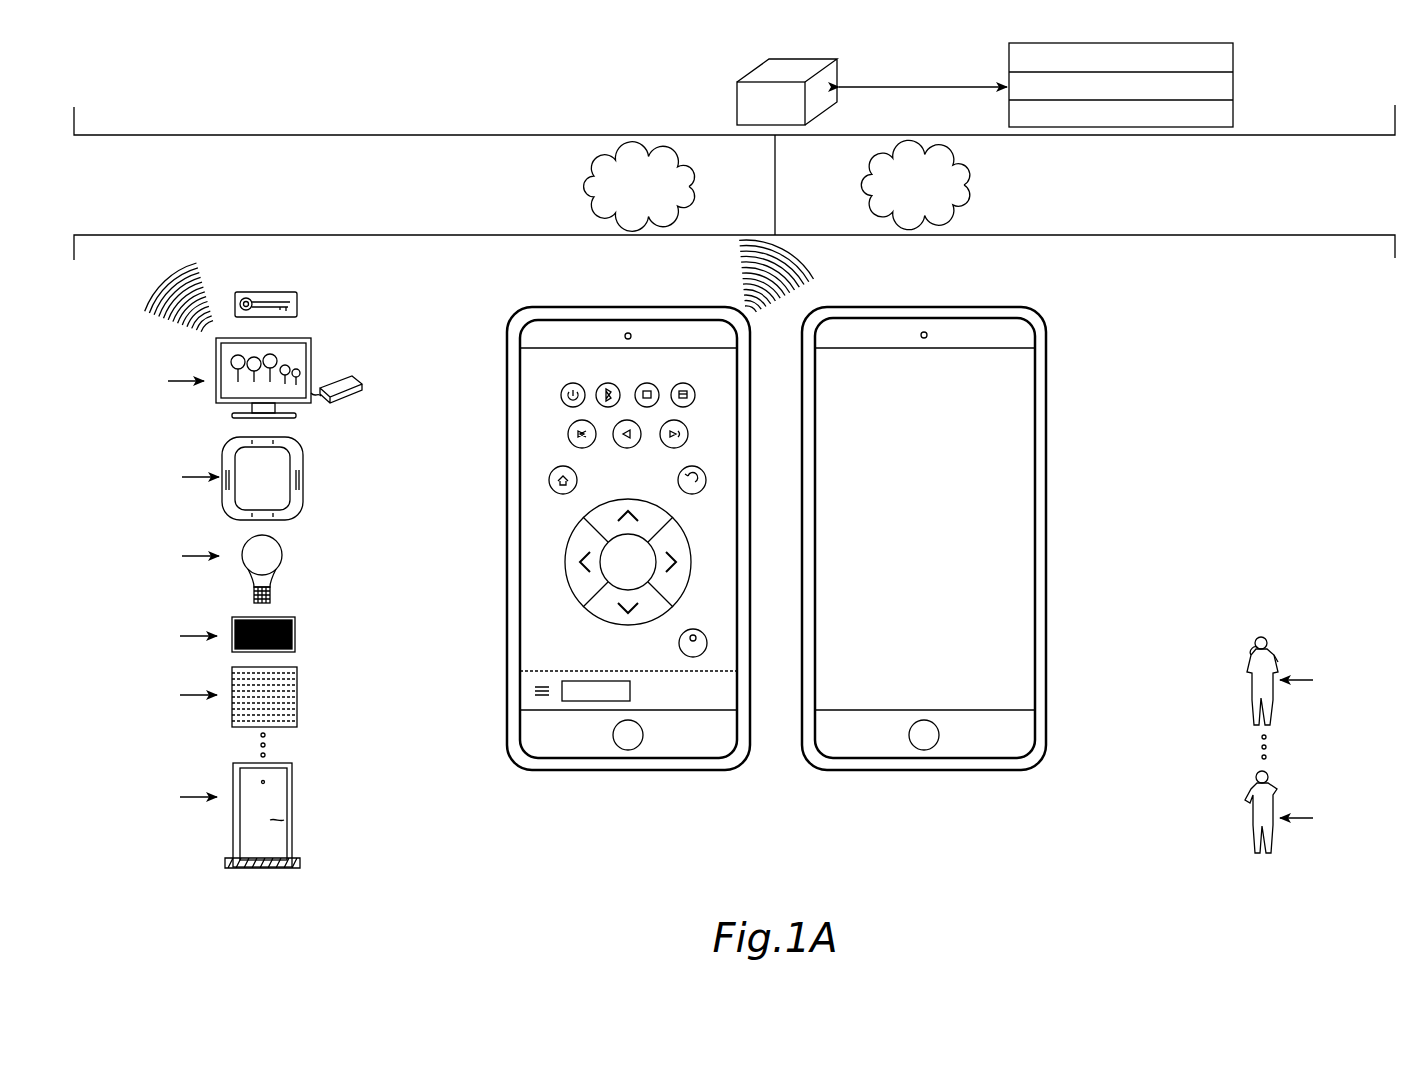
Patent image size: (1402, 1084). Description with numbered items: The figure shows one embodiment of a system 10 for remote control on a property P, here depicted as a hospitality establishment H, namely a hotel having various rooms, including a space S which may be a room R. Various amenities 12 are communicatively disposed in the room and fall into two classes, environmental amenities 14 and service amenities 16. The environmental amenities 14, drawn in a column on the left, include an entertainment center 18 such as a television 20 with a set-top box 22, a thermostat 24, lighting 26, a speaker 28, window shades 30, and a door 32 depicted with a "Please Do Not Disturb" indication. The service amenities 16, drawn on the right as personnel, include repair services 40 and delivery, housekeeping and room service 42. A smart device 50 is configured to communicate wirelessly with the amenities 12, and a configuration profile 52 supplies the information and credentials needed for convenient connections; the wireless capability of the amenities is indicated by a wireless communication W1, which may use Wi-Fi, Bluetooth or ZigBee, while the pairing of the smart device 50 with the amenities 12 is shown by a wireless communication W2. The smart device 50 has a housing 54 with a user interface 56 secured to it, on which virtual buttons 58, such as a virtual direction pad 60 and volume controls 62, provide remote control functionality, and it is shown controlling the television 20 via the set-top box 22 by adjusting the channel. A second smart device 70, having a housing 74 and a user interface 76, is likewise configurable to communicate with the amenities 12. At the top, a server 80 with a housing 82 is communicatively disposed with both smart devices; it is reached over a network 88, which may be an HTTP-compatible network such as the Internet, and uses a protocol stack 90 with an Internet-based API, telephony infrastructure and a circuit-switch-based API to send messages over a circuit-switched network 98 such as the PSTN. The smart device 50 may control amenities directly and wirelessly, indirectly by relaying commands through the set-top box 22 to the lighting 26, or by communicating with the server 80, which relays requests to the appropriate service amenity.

The system 10 is at (1233, 376).
The amenities 12 is at (387, 881).
The environmental amenities 14 is at (387, 847).
The service amenities 16 is at (1154, 846).
The entertainment center 18 is at (311, 345).
The television 20 is at (296, 418).
The set-top box 22 is at (362, 388).
The thermostat 24 is at (303, 478).
The lighting 26 is at (282, 562).
The speaker 28 is at (295, 637).
The window shades 30 is at (297, 697).
The door 32 is at (292, 797).
The repair services 40 is at (1247, 681).
The room service 42 is at (1247, 818).
The smart device 50 is at (590, 530).
The configuration profile 52 is at (297, 305).
The housing 54 is at (507, 499).
The user interface 56 is at (540, 649).
The virtual buttons 58 is at (558, 389).
The directional pad 60 is at (565, 563).
The volume controls 62 is at (568, 434).
The smart device 70 is at (961, 532).
The housing 74 is at (1046, 498).
The user interface 76 is at (1012, 649).
The server 80 is at (768, 60).
The housing 82 is at (737, 83).
The network 88 is at (586, 184).
The protocol stack 90 is at (1236, 87).
The circuit-switched network 98 is at (967, 184).
The wireless communication W1 is at (150, 309).
The wireless communication W2 is at (812, 282).
The property P is at (1221, 450).
The hospitality establishment H is at (1221, 480).
The room R is at (1221, 509).
The space S is at (1221, 538).